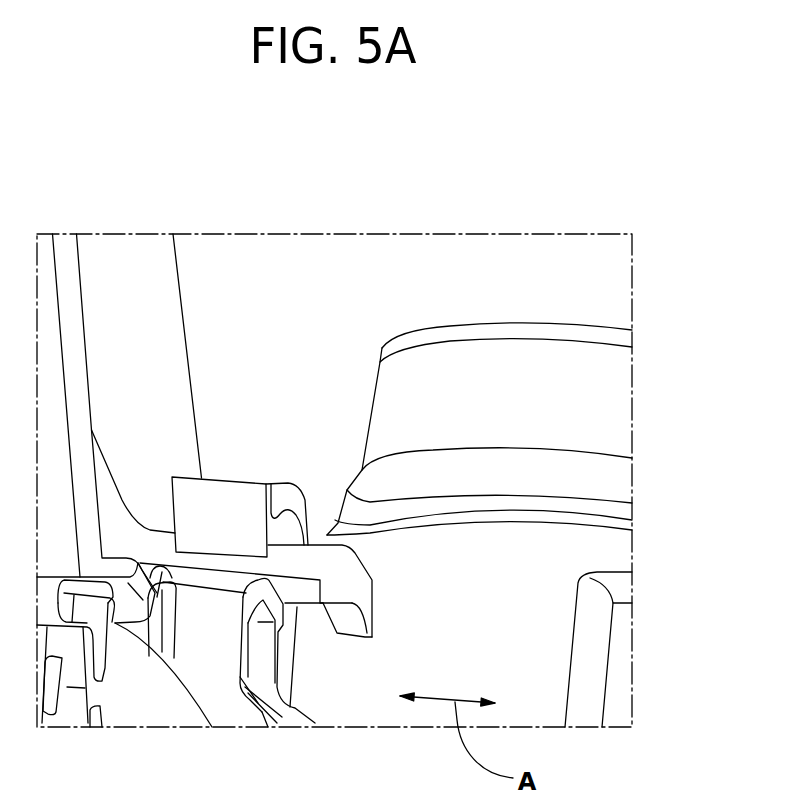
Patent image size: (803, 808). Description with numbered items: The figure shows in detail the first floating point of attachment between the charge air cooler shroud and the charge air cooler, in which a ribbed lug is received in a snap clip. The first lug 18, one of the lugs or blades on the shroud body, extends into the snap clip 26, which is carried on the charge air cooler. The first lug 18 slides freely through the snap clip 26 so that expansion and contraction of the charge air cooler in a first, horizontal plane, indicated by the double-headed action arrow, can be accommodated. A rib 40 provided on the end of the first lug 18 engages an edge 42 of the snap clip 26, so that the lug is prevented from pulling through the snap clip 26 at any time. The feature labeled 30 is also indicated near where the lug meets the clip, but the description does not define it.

The snap clip 26 is at (288, 450).
The contact portion 30 is at (297, 503).
The first lug 18 is at (302, 565).
The rib 40 is at (347, 633).
The edge 42 is at (248, 708).